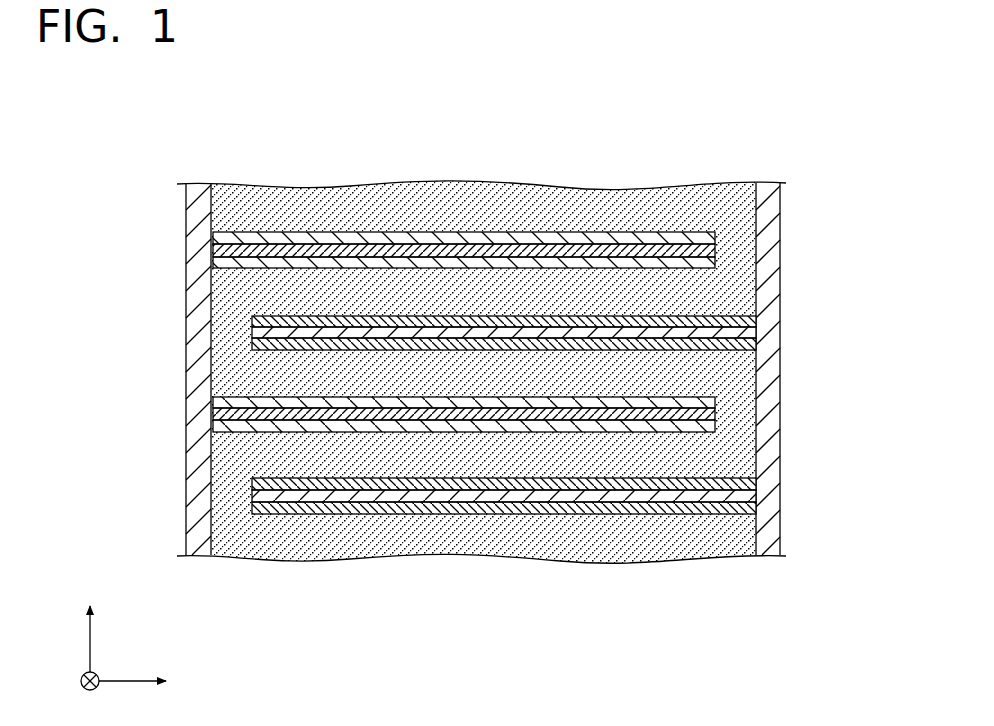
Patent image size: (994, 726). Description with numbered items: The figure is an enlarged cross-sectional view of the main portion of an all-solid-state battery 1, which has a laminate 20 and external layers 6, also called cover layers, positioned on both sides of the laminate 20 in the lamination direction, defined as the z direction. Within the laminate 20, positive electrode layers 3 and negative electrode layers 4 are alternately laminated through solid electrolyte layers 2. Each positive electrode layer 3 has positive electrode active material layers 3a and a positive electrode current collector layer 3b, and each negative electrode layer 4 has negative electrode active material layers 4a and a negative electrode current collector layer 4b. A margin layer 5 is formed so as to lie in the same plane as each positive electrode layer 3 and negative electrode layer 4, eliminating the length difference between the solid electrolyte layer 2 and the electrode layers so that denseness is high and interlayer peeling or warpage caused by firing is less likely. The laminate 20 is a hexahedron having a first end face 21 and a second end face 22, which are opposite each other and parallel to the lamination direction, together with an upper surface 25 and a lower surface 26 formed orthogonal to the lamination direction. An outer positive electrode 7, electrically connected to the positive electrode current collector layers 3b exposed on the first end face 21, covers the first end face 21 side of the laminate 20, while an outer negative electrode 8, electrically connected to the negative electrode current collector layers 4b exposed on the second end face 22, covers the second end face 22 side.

The all-solid-state battery 1 is at (803, 150).
The solid electrolyte layer 2 is at (208, 292).
The positive electrode layer 3 is at (92, 196).
The positive electrode active material layer 3a is at (213, 238).
The positive electrode current collector layer 3b is at (213, 250).
The negative electrode layer 4 is at (872, 276).
The negative electrode active material layer 4a is at (750, 322).
The negative electrode current collector layer 4b is at (750, 333).
The margin layer 5 is at (740, 254).
The external layer 6 is at (256, 215).
The outer positive electrode 7 is at (200, 378).
The outer negative electrode 8 is at (768, 458).
The laminate 20 is at (641, 231).
The first end face 21 is at (215, 540).
The second end face 22 is at (745, 540).
The upper surface 25 is at (300, 232).
The lower surface 26 is at (300, 518).